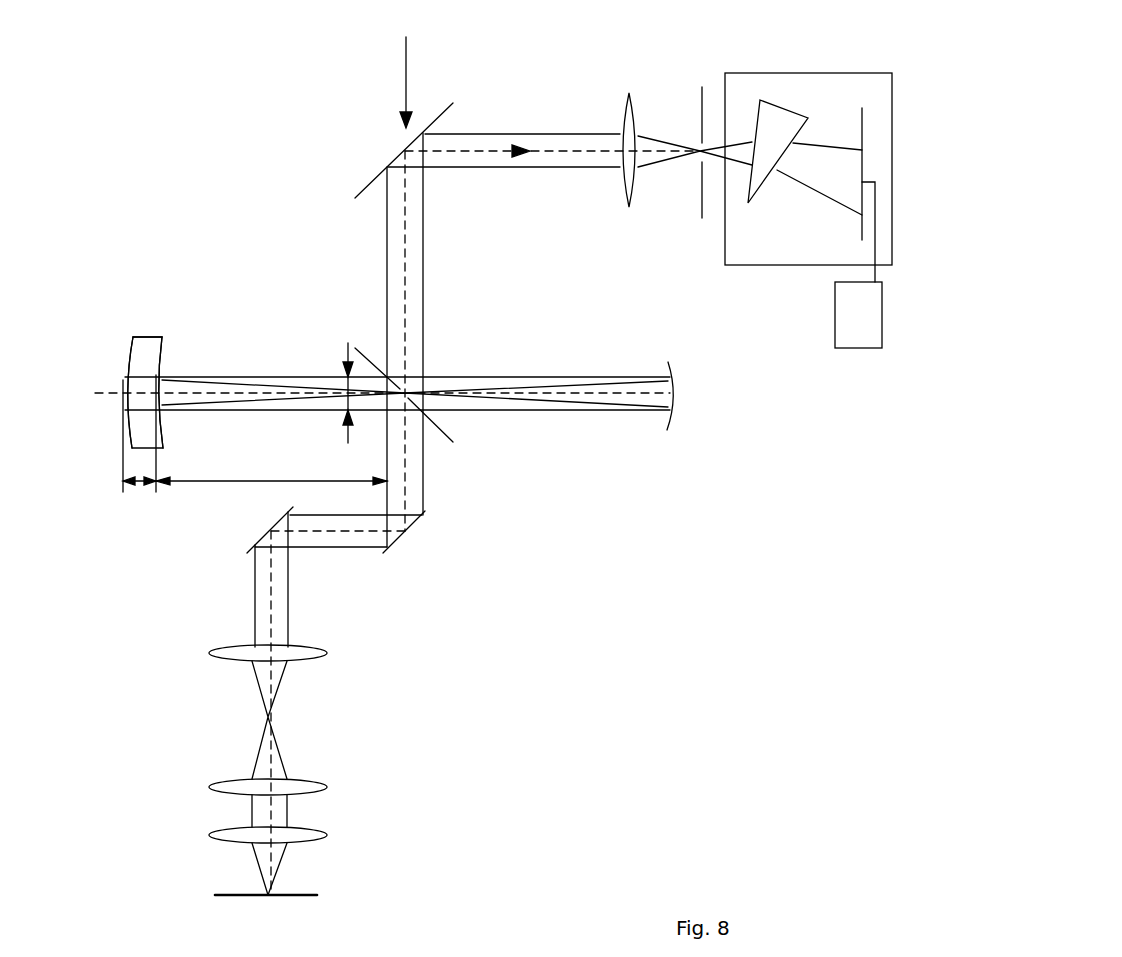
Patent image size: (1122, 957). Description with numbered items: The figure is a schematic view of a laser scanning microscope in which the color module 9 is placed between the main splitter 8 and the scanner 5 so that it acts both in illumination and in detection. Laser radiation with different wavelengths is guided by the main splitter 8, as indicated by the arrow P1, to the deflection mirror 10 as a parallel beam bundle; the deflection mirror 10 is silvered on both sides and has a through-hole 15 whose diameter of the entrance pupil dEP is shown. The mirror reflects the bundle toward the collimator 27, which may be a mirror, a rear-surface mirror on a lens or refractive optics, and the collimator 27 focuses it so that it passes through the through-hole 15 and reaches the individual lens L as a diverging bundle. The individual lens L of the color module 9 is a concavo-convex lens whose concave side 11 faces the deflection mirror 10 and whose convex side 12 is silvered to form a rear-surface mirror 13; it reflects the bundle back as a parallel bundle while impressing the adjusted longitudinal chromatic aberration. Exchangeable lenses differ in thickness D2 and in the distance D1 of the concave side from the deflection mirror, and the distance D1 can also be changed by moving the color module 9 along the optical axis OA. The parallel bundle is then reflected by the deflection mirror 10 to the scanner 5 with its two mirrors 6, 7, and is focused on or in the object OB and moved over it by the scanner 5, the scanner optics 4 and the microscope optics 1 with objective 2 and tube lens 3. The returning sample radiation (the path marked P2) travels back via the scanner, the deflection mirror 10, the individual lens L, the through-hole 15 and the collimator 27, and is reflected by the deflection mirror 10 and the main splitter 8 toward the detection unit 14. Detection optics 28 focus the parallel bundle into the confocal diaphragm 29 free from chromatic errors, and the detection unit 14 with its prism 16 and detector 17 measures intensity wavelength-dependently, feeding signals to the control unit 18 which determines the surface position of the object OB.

The microscope optics 1 is at (350, 806).
The objective 2 is at (223, 830).
The tube lens 3 is at (223, 782).
The scanner optics 4 is at (223, 647).
The deflecting unit and scanner 5 is at (385, 572).
The mirror 6 is at (252, 543).
The mirror 7 is at (417, 527).
The main splitter 8 is at (375, 177).
The color module 9 is at (108, 324).
The deflection mirror 10 is at (367, 355).
The concave side 11 is at (165, 350).
The convex side 12 is at (128, 358).
The rear-surface mirror 13 is at (125, 367).
The detection unit 14 is at (817, 73).
The through-hole 15 is at (410, 390).
The prism 16 is at (767, 102).
The detector 17 is at (862, 108).
The control unit 18 is at (835, 343).
The collimator 27 is at (672, 385).
The detection optics 28 is at (628, 207).
The confocal diaphragm 29 is at (702, 207).
The individual lens L is at (147, 337).
The optical axis OA is at (108, 395).
The object OB is at (225, 895).
The arrow P1 is at (406, 85).
The measuring beam P2 is at (488, 152).
The distance D1 is at (210, 477).
The thickness D2 is at (137, 485).
The diameter of the entrance pupil dEP is at (413, 398).